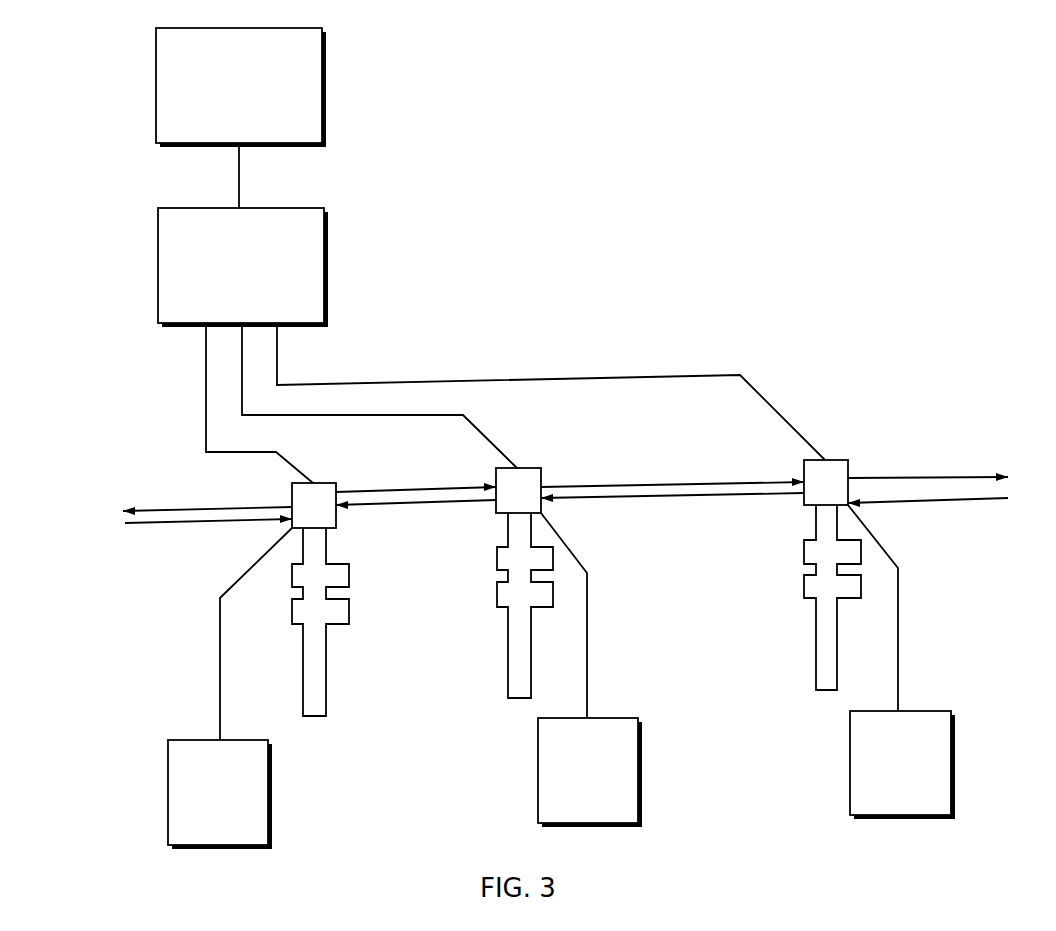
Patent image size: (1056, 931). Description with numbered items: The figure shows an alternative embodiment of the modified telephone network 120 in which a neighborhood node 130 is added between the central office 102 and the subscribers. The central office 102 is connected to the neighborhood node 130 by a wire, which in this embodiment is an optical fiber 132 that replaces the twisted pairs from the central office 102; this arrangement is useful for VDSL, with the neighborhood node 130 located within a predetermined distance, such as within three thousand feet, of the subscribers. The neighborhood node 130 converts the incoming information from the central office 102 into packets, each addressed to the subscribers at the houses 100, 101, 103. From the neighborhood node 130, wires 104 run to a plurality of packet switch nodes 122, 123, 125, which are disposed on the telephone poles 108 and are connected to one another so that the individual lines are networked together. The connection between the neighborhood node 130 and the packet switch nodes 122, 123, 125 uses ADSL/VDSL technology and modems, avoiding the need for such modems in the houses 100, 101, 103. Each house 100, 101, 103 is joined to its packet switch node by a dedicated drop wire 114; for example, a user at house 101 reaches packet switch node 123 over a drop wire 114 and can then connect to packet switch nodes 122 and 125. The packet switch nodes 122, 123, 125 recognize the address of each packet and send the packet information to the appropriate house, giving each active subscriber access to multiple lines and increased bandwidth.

The house 100 is at (268, 817).
The house 101 is at (638, 795).
The central office 102 is at (322, 103).
The house 103 is at (951, 785).
The twisted pair wires 104 is at (242, 361).
The telephone poles 108 is at (326, 647).
The drop wires 114 is at (220, 683).
The modified telephone network 120 is at (668, 145).
The packet switch node 122 is at (292, 532).
The packet switch node 123 is at (541, 478).
The packet switch node 125 is at (848, 476).
The neighborhood node 130 is at (324, 263).
The optical fiber 132 is at (239, 192).